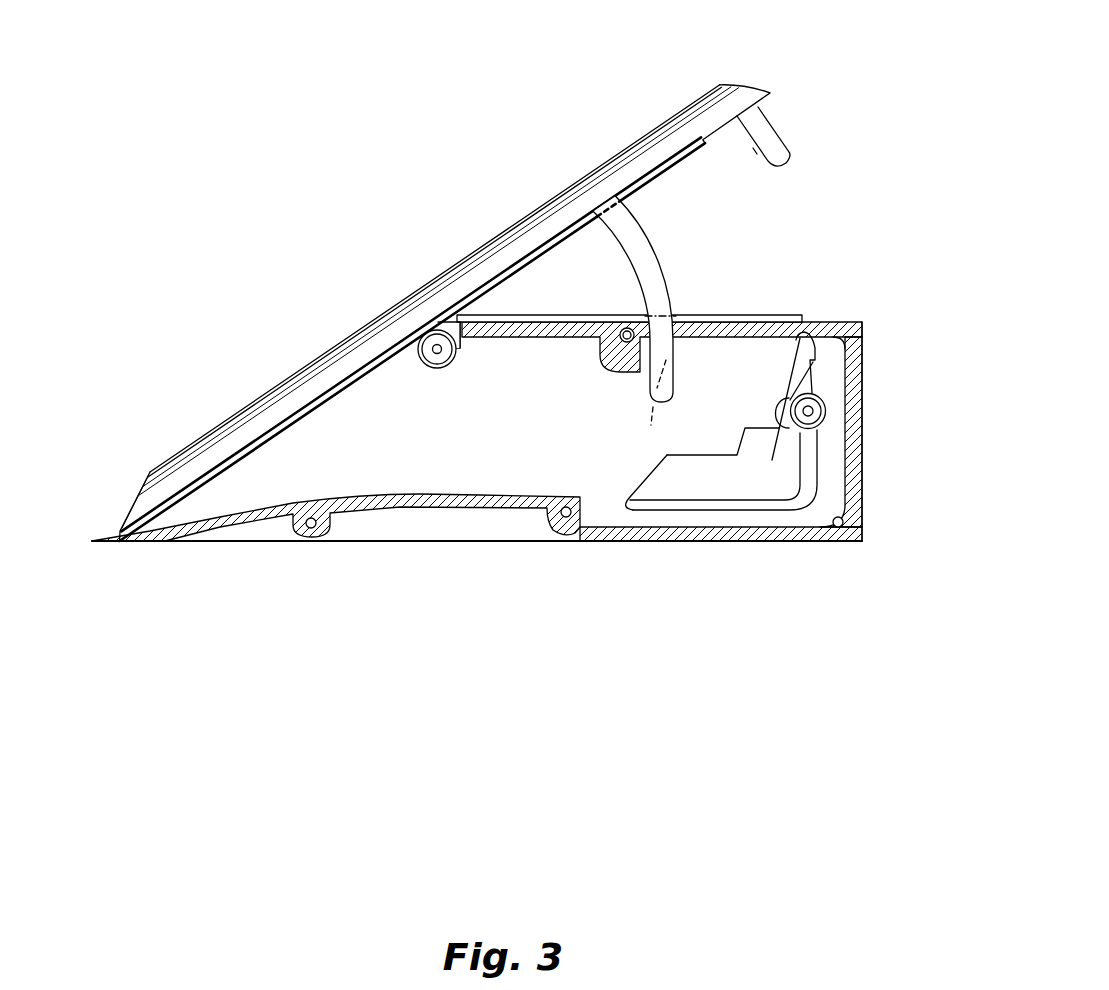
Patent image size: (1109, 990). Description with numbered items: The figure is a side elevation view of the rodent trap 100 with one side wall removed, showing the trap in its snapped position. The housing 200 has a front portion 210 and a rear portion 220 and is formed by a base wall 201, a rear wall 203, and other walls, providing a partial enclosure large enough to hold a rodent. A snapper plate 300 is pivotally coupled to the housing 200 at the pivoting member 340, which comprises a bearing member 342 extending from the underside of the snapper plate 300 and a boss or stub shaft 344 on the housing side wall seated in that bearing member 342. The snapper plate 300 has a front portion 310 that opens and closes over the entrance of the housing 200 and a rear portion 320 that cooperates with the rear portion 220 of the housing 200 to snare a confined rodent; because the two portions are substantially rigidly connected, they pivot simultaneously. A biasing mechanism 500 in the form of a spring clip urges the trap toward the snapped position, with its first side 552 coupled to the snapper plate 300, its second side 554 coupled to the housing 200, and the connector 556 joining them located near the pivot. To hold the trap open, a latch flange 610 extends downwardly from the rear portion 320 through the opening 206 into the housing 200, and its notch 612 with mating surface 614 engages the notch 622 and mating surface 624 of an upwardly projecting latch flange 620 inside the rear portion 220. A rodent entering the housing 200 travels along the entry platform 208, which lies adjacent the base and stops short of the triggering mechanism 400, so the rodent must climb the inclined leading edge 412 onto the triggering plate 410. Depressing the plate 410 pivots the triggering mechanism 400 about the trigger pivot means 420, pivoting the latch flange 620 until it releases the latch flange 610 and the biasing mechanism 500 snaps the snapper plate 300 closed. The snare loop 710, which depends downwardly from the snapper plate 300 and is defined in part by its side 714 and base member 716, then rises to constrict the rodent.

The trap 100 is at (372, 214).
The housing 200 is at (408, 543).
The base wall 201 is at (168, 533).
The rear wall 203 is at (855, 447).
The opening 206 is at (820, 321).
The entry platform 208 is at (372, 494).
The front portion 210 is at (125, 538).
The rear portion 220 is at (843, 533).
The snapper plate 300 is at (650, 142).
The front portion 310 is at (202, 443).
The rear portion 320 is at (723, 91).
The pivoting member 340 is at (440, 321).
The bearing member 342 is at (457, 350).
The boss or stub shaft 344 is at (438, 368).
The triggering mechanism 400 is at (825, 493).
The triggering plate 410 is at (705, 472).
The leading edge 412 is at (653, 478).
The trigger pivot means 420 is at (827, 402).
The biasing mechanism 500 is at (767, 314).
The first side 552 is at (552, 245).
The second side 554 is at (705, 314).
The connector 556 is at (472, 316).
The latch flange 610 is at (790, 158).
The notch 612 is at (762, 152).
The mating surface 614 is at (750, 148).
The latch flange 620 is at (800, 348).
The notch 622 is at (805, 362).
The mating surface 624 is at (773, 410).
The snare loop 710 is at (632, 246).
The side 714 is at (649, 271).
The base member 716 is at (652, 428).